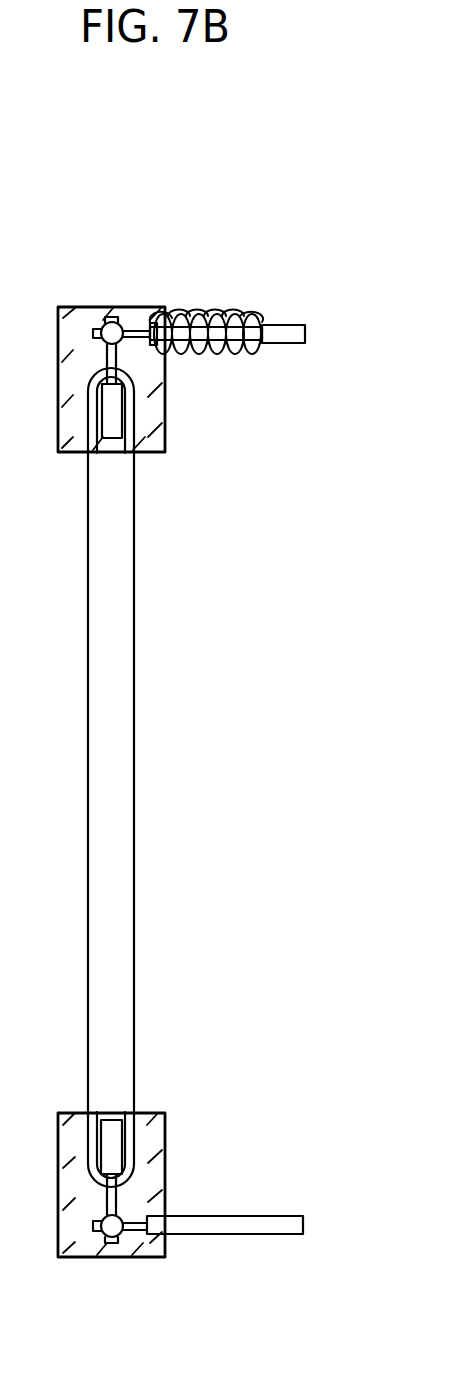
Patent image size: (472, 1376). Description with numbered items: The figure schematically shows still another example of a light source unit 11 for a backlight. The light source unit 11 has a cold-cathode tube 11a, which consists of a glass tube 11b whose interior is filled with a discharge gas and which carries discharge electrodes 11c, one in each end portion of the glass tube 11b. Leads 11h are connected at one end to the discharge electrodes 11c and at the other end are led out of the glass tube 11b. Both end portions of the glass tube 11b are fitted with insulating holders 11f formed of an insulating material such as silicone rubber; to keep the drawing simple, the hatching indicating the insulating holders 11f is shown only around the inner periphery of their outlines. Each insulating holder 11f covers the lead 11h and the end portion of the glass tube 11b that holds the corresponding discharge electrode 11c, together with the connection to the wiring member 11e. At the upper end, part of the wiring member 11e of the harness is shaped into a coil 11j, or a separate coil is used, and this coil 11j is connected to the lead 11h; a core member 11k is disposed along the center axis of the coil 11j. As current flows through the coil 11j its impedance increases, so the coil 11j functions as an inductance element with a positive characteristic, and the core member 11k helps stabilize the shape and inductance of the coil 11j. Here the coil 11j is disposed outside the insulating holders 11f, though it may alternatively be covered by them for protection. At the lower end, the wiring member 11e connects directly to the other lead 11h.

The light source unit 11 is at (182, 913).
The cold-cathode tube 11a is at (156, 823).
The glass tube 11b is at (136, 655).
The discharge electrode 11c is at (110, 430).
The wiring member 11e is at (287, 332).
The insulating holder 11f is at (83, 335).
The lead 11h is at (117, 358).
The coil 11j is at (208, 317).
The core member 11k is at (253, 350).